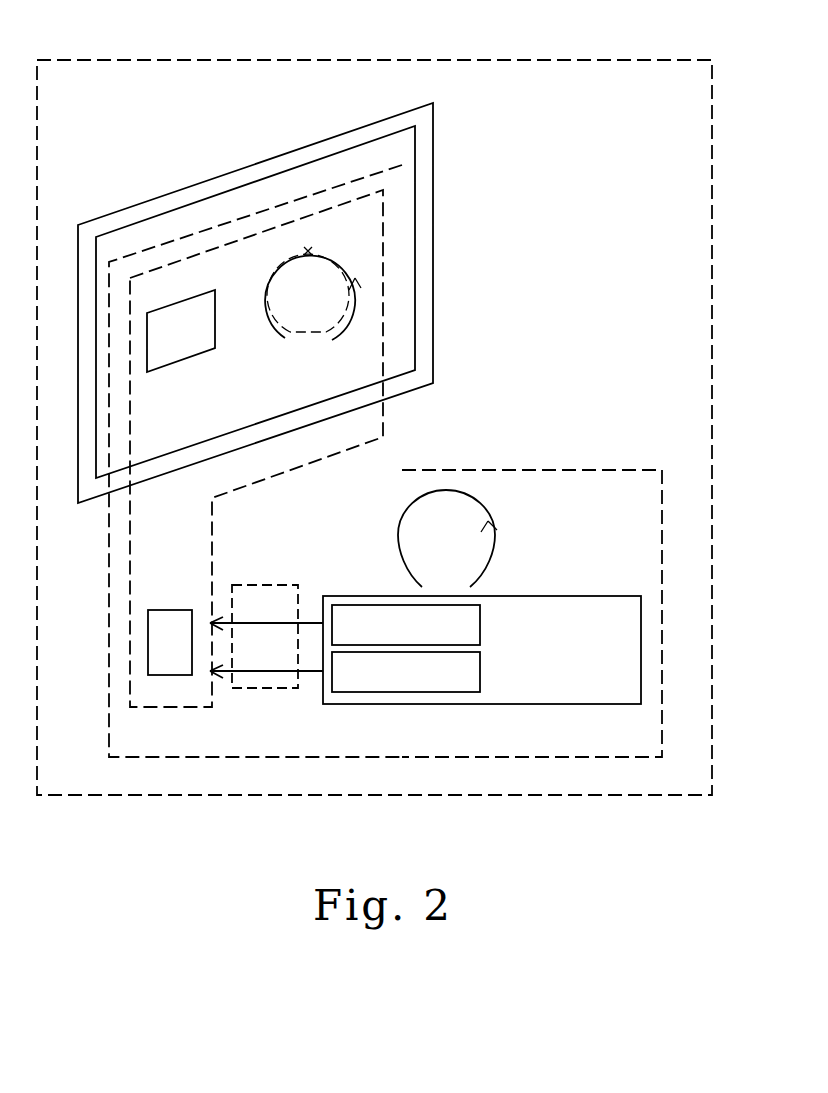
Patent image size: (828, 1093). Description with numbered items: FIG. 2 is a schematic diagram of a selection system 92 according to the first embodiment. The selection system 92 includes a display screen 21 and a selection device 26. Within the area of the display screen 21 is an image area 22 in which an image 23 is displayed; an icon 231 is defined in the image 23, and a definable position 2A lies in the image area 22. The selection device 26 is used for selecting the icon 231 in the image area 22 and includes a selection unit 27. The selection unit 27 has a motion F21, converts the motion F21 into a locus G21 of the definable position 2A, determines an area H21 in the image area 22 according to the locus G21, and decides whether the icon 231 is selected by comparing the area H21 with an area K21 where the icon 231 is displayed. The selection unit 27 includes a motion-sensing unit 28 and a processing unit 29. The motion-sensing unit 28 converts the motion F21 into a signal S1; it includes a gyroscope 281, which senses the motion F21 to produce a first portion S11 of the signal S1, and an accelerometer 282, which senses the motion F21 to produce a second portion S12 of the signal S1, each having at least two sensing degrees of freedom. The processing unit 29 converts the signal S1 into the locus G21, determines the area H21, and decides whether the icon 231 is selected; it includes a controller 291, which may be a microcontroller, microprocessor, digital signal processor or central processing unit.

The selection system 92 is at (265, 60).
The processing unit 29 is at (109, 734).
The display screen 21 is at (433, 212).
The image area 22 is at (148, 218).
The image 23 is at (277, 190).
The icon 231 is at (217, 312).
The area K21 is at (173, 345).
The area H21 is at (270, 307).
The locus G21 is at (353, 313).
The definable position 2A is at (309, 250).
The controller 291 is at (148, 622).
The selection device 26 is at (480, 445).
The selection unit 27 is at (605, 470).
The motion F21 is at (462, 538).
The motion-sensing unit 28 is at (641, 672).
The gyroscope 281 is at (342, 605).
The accelerometer 282 is at (331, 679).
The signal S1 is at (257, 585).
The first portion of the signal S11 is at (266, 613).
The second portion of the signal S12 is at (266, 661).